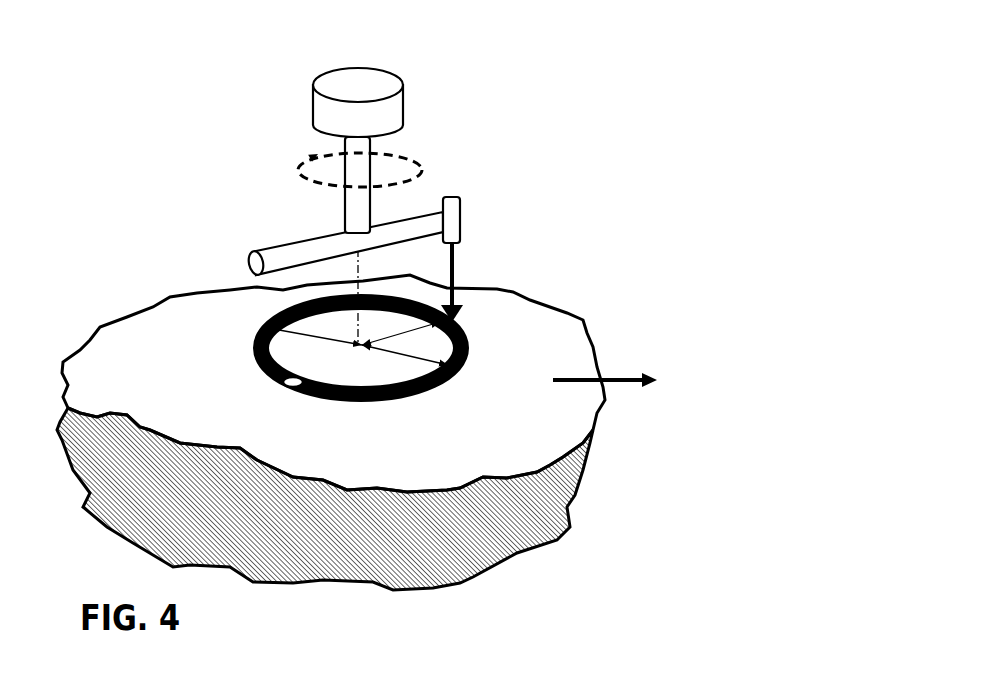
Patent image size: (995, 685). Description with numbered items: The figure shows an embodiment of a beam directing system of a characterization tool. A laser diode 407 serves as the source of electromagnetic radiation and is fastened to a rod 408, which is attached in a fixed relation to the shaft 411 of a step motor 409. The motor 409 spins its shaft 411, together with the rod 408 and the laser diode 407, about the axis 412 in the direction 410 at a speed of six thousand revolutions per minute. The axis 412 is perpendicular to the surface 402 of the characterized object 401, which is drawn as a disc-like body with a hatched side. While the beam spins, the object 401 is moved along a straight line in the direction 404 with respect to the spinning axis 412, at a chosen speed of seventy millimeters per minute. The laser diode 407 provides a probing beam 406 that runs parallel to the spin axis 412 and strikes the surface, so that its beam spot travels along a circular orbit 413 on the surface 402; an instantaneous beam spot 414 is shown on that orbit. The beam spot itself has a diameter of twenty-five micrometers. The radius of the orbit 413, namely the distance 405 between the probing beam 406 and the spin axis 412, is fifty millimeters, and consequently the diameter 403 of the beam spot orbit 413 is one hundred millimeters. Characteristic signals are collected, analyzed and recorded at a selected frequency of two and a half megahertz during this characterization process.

The characterized object 401 is at (361, 432).
The surface 402 is at (357, 500).
The diameter of the beam spot orbit 403 is at (366, 450).
The direction 404 is at (621, 381).
The distance 405 is at (466, 343).
The probing beam 406 is at (553, 282).
The laser diode 407 is at (554, 227).
The rod 408 is at (396, 149).
The step motor 409 is at (389, 80).
The direction 410 is at (324, 105).
The shaft 411 is at (246, 128).
The axis 412 is at (201, 184).
The orbit 413 is at (255, 276).
The instantaneous beam spot 414 is at (175, 333).